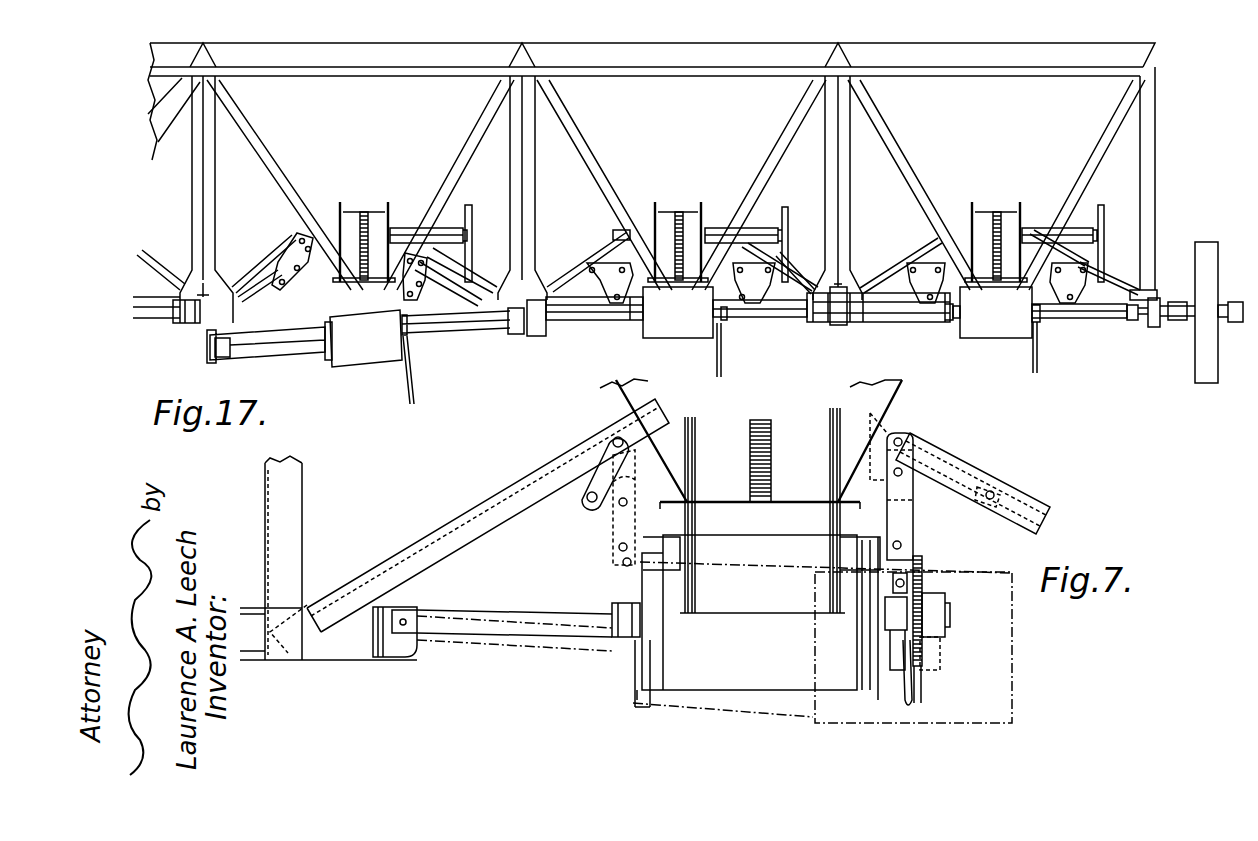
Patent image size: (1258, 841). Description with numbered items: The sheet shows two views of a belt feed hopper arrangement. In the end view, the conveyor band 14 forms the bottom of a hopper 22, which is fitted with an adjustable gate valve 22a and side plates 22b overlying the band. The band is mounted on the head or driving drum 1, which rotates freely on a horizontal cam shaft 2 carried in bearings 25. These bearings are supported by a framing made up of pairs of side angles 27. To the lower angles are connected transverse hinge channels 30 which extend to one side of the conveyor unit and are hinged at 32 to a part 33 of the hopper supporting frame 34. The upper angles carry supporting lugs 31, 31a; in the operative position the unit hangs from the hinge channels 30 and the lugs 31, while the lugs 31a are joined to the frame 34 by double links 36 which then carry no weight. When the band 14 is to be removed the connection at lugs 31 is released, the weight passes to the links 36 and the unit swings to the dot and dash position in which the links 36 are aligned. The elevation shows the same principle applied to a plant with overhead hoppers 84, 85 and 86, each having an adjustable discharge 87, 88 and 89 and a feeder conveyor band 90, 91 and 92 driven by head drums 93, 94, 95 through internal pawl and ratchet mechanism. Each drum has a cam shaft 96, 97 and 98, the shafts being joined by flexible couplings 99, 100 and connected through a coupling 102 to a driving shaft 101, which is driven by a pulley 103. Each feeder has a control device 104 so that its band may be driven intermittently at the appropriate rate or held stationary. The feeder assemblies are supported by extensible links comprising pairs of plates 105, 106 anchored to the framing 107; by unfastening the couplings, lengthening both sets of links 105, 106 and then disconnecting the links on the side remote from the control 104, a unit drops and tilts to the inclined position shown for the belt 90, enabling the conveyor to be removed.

In FIG. 17, the overhead hopper 84 is at (364, 205).
In FIG. 17, the overhead hopper 85 is at (678, 205).
In FIG. 17, the overhead hopper 86 is at (996, 205).
In FIG. 17, the adjustable discharge 87 is at (368, 217).
In FIG. 17, the adjustable discharge 88 is at (685, 217).
In FIG. 17, the adjustable discharge 89 is at (1010, 217).
In FIG. 17, the feeder conveyor band 90 is at (366, 338).
In FIG. 17, the feeder conveyor band 91 is at (678, 312).
In FIG. 17, the feeder conveyor band 92 is at (996, 312).
In FIG. 17, the head drum 93 is at (330, 350).
In FIG. 17, the head drum 94 is at (643, 336).
In FIG. 17, the head drum 95 is at (960, 336).
In FIG. 17, the cam shaft 96 is at (276, 346).
In FIG. 17, the cam shaft 97 is at (578, 316).
In FIG. 17, the cam shaft 98 is at (885, 323).
In FIG. 17, the flexible coupling 99 is at (525, 334).
In FIG. 17, the flexible coupling 100 is at (838, 325).
In FIG. 17, the driving shaft 101 is at (1232, 318).
In FIG. 17, the coupling 102 is at (1152, 326).
In FIG. 17, the pulley 103 is at (1207, 381).
In FIG. 17, the control device 104 is at (412, 372).
In FIG. 17, the plate 105 is at (290, 233).
In FIG. 17, the plate 106 is at (290, 270).
In FIG. 17, the framing 107 is at (267, 261).
In FIG. 7, the head or driving drum 1 is at (653, 676).
In FIG. 7, the cam shaft 2 is at (948, 610).
In FIG. 7, the conveyor band 14 is at (1030, 638).
In FIG. 7, the hopper 22 is at (628, 400).
In FIG. 7, the adjustable gate valve 22a is at (758, 425).
In FIG. 7, the side plates 22b is at (828, 515).
In FIG. 7, the bearings 25 is at (888, 618).
In FIG. 7, the side angles 27 is at (623, 637).
In FIG. 7, the hinge channel 30 is at (542, 615).
In FIG. 7, the supporting lug 31 is at (903, 560).
In FIG. 7, the supporting lug 31a is at (612, 565).
In FIG. 7, the hinge 32 is at (407, 620).
In FIG. 7, the part of hopper supporting frame 33 is at (390, 649).
In FIG. 7, the hopper supporting frame 34 is at (555, 478).
In FIG. 7, the double links 36 is at (598, 515).